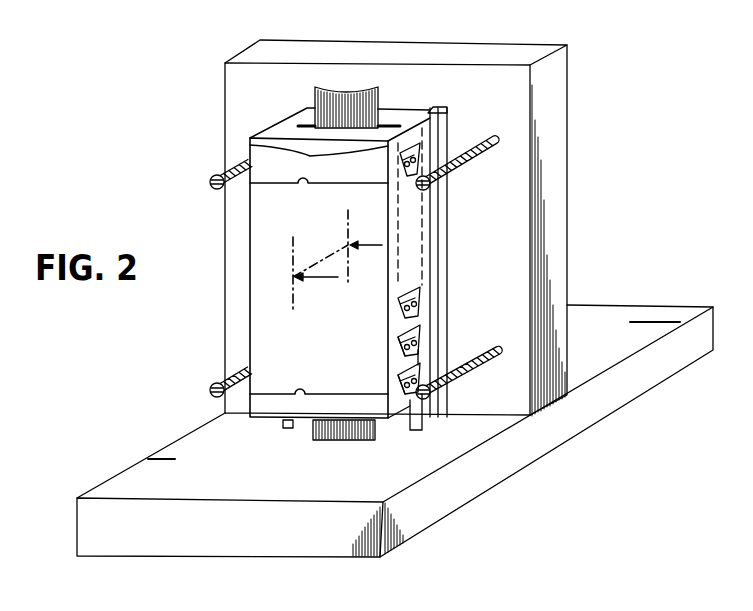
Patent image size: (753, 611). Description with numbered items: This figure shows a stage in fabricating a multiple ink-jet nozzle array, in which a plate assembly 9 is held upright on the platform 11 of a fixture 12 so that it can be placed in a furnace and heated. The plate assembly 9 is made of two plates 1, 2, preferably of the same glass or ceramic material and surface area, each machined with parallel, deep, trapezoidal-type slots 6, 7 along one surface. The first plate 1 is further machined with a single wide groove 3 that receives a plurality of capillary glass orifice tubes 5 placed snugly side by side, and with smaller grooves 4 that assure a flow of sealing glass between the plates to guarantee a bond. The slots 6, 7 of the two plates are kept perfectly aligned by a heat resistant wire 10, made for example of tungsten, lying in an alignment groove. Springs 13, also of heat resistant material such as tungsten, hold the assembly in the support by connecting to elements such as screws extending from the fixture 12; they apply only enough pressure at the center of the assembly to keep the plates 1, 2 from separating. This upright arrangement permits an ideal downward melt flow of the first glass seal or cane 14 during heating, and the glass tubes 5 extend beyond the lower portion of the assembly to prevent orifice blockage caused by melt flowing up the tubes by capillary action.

The plate 1 is at (295, 115).
The plate 2 is at (270, 130).
The wide groove 3 is at (323, 261).
The smaller grooves 4 is at (390, 125).
The capillary glass orifice tubes 5 is at (313, 440).
The trapezoidal slots 6 is at (424, 352).
The trapezoidal slots 7 is at (399, 378).
The plate assembly 9 is at (426, 226).
The wire 10 is at (281, 152).
The platform 11 is at (283, 423).
The fixture 12 is at (600, 310).
The springs 13 is at (289, 188).
The first glass seal or cane 14 is at (412, 158).